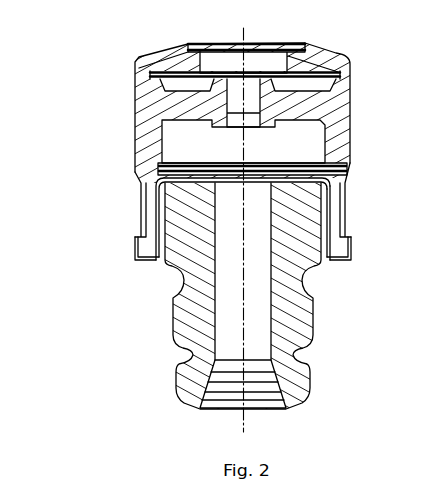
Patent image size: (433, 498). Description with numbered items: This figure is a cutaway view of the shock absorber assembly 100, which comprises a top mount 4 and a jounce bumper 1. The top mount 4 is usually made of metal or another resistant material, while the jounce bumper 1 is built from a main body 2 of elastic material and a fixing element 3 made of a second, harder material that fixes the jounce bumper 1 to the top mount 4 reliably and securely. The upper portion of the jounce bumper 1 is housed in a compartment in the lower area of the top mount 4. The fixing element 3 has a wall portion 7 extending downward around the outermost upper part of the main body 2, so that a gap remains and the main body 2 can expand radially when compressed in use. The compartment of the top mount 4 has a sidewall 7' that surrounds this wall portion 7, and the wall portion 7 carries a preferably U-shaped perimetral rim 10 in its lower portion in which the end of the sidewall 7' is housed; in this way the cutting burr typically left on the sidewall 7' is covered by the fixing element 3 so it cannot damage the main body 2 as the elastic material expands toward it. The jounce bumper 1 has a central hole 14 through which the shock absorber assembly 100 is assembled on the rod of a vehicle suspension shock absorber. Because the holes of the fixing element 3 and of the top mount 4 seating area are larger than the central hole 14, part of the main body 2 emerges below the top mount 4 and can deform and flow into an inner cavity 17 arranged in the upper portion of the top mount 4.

The shock absorber assembly 100 is at (98, 53).
The jounce bumper 1 is at (142, 286).
The main body 2 is at (315, 316).
The fixing element 3 is at (158, 226).
The top mount 4 is at (347, 99).
The wall portion 7 is at (346, 243).
The sidewall 7' is at (362, 200).
The perimetral rim 10 is at (351, 241).
The central hole 14 is at (231, 268).
The inner cavity 17 is at (288, 152).